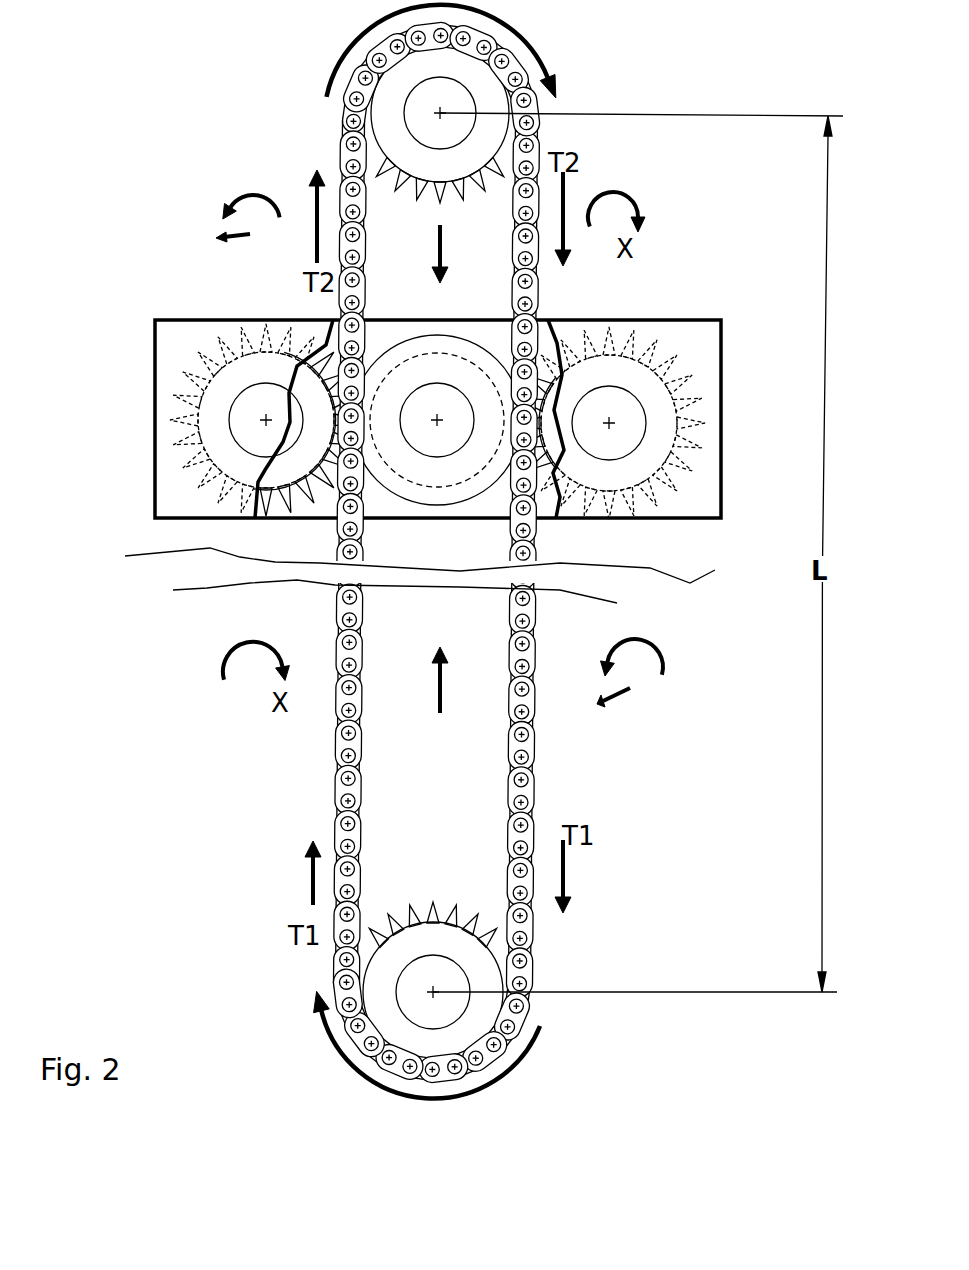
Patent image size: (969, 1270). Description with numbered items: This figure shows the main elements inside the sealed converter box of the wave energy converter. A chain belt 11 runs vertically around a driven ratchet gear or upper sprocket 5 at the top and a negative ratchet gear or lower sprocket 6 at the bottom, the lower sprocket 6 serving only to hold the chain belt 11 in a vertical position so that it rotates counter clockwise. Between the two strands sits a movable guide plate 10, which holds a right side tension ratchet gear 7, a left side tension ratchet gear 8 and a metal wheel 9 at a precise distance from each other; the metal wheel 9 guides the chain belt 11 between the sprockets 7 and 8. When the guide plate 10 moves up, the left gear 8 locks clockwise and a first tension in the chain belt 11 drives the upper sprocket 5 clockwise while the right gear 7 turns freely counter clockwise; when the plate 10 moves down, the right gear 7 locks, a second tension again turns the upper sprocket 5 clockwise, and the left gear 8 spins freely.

The driven ratchet gear or upper sprocket 5 is at (380, 102).
The negative ratchet gear or lower sprocket 6 is at (372, 985).
The tension ratchet gear or right side sprocket 7 is at (627, 385).
The tension ratchet gear or left side sprocket 8 is at (208, 408).
The metal wheel 9 is at (430, 470).
The movable guide plate 10 is at (692, 507).
The chain belt 11 is at (530, 765).